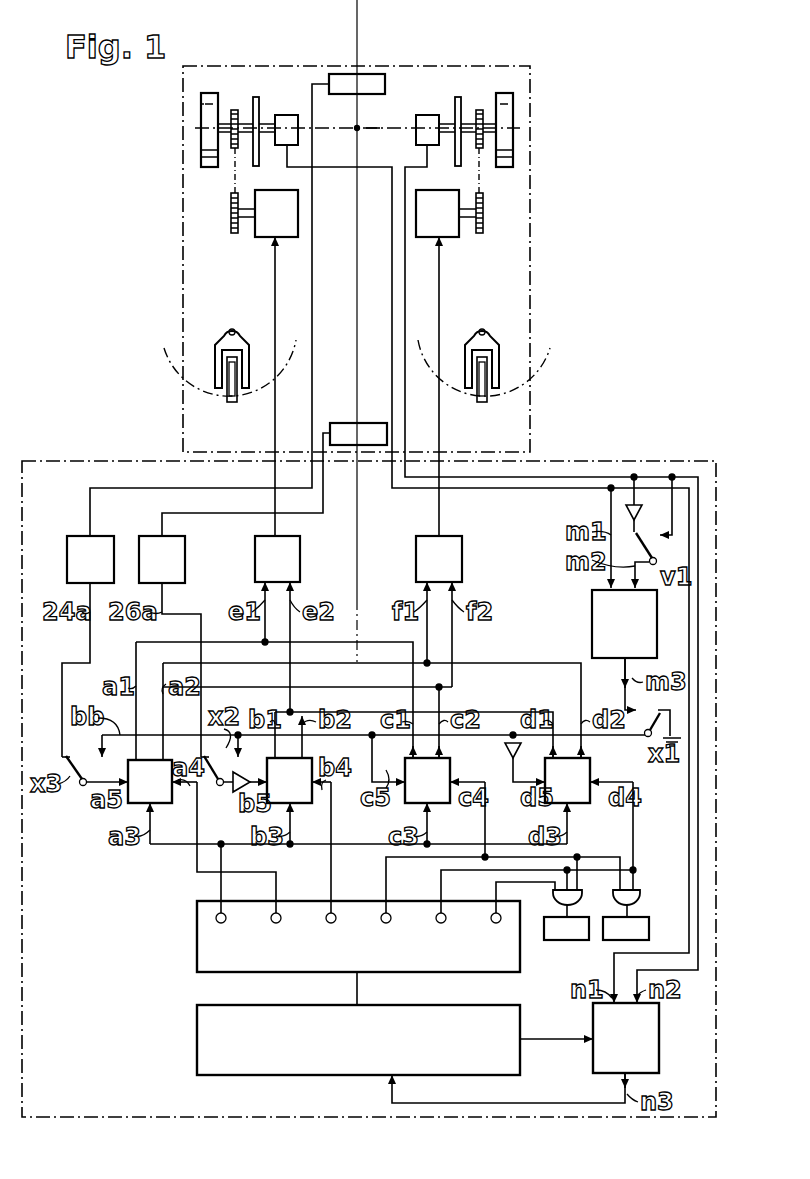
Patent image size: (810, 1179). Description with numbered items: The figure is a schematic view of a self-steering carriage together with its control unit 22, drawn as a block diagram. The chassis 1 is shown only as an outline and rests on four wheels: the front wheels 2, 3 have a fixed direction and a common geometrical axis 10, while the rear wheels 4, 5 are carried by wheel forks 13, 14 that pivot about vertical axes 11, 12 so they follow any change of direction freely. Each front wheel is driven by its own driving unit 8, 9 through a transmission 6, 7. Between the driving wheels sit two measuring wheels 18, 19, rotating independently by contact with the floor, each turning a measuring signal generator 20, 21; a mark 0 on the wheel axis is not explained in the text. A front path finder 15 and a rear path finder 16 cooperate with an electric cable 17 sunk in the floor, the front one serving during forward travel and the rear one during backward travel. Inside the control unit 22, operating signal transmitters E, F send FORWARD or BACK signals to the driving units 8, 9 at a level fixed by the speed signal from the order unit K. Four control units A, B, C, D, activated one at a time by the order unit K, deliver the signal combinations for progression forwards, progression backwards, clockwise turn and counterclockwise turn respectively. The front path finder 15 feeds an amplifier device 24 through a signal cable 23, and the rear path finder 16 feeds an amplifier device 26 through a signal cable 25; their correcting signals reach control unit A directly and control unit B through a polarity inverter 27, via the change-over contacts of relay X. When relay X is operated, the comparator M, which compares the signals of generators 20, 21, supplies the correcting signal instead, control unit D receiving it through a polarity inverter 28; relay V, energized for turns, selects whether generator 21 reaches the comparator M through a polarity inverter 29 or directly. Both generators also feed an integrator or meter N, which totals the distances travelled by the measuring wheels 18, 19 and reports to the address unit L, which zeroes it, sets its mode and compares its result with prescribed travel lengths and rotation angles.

The center point 0 is at (356, 127).
The chassis 1 is at (530, 228).
The front wheel 2 is at (210, 120).
The front wheel 3 is at (504, 120).
The rear wheel 4 is at (228, 398).
The rear wheel 5 is at (486, 398).
The transmission 6 is at (235, 180).
The transmission 7 is at (480, 180).
The driving unit 8 is at (272, 240).
The driving unit 9 is at (442, 240).
The geometrical axis 10 is at (368, 128).
The vertical axis 11 is at (226, 328).
The vertical axis 12 is at (488, 328).
The wheel fork 13 is at (218, 375).
The wheel fork 14 is at (496, 375).
The front path finder device 15 is at (342, 80).
The rear path finder device 16 is at (340, 430).
The electric cable 17 is at (357, 262).
The measuring wheel 18 is at (256, 97).
The measuring wheel 19 is at (458, 97).
The measuring signal generator 20 is at (287, 115).
The measuring signal generator 21 is at (428, 115).
The control unit 22 is at (588, 466).
The signal cable 23 is at (117, 488).
The amplifier device 24 is at (76, 566).
The signal cable 25 is at (308, 513).
The amplifier device 26 is at (172, 566).
The polarity inverter 27 is at (236, 788).
The polarity inverter 28 is at (506, 773).
The polarity inverter 29 is at (626, 513).
The control unit A is at (150, 781).
The control unit B is at (289, 780).
The control unit C is at (427, 780).
The control unit D is at (567, 780).
The operating signal transmitter E is at (290, 565).
The operating signal transmitter F is at (425, 565).
The order unit K is at (197, 942).
The address unit L is at (197, 1046).
The comparator M is at (600, 628).
The integrator or meter N is at (650, 1046).
The relay V is at (640, 934).
The relay X is at (565, 942).